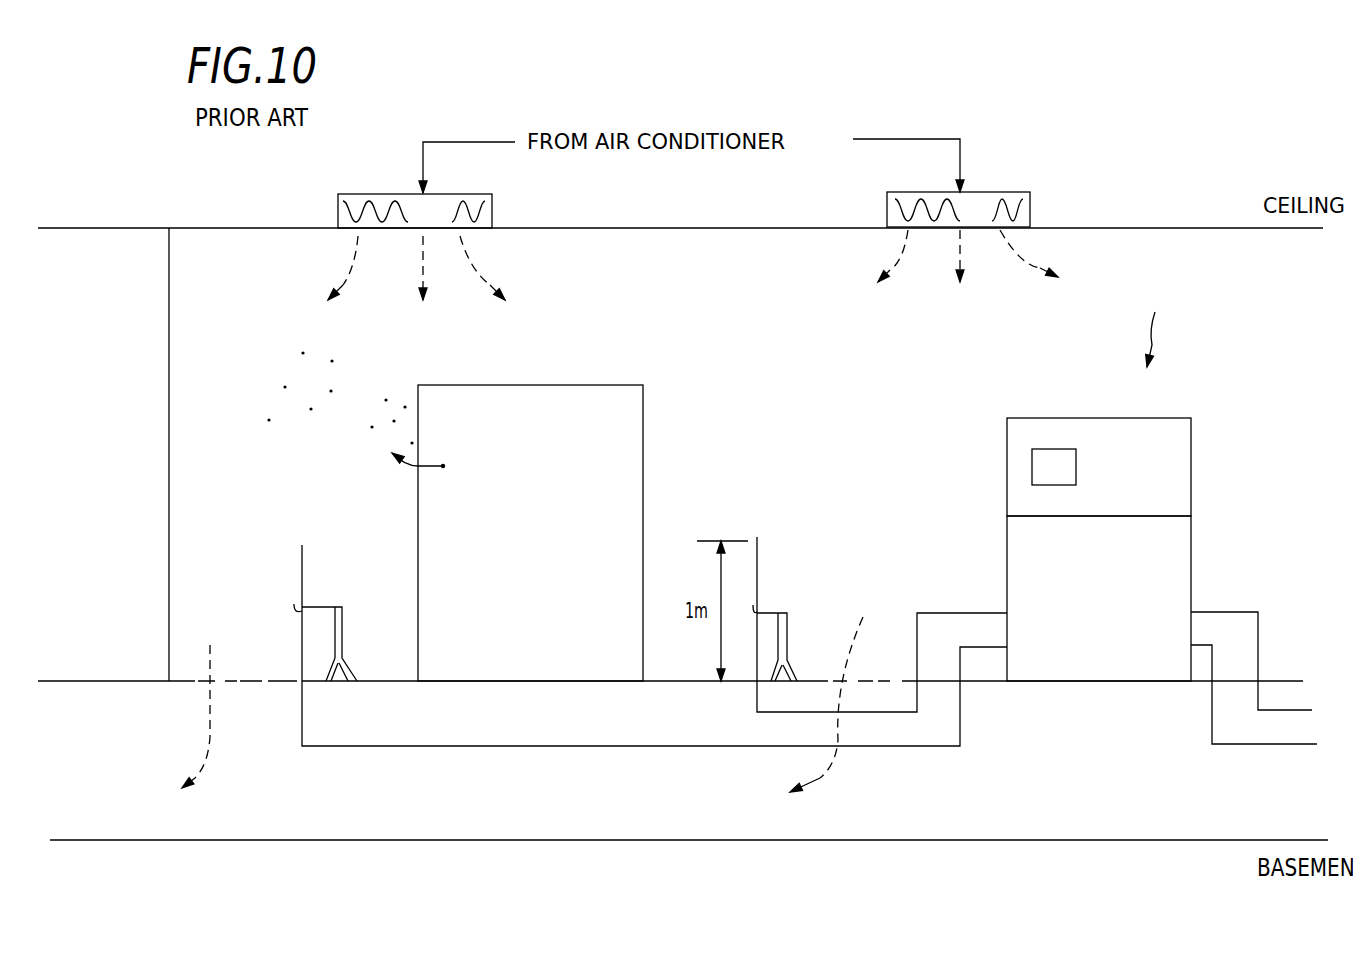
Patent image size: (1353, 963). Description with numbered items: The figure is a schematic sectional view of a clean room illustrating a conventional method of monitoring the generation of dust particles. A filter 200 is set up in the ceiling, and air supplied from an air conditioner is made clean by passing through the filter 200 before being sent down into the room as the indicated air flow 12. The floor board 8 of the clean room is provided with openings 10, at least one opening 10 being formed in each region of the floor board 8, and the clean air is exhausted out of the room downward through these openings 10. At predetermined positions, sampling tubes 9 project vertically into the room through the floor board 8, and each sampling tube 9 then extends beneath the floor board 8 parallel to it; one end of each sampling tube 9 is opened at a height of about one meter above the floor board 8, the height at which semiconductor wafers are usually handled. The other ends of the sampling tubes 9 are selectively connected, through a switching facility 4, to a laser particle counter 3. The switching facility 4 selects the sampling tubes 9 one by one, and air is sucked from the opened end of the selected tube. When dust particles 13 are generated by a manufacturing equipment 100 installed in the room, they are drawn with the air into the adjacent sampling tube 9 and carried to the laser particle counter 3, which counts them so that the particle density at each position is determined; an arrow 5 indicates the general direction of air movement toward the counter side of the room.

The laser particle counter 3 is at (1040, 426).
The switching facility 4 is at (1191, 548).
The air flow 5 is at (1172, 306).
The floor board 8 is at (52, 684).
The sampling tube 9 is at (303, 558).
The opening 10 is at (248, 681).
The air flow from diffuser 12 is at (470, 267).
The dust particles 13 is at (332, 420).
The manufacturing equipment 100 is at (643, 432).
The filter 200 is at (492, 208).